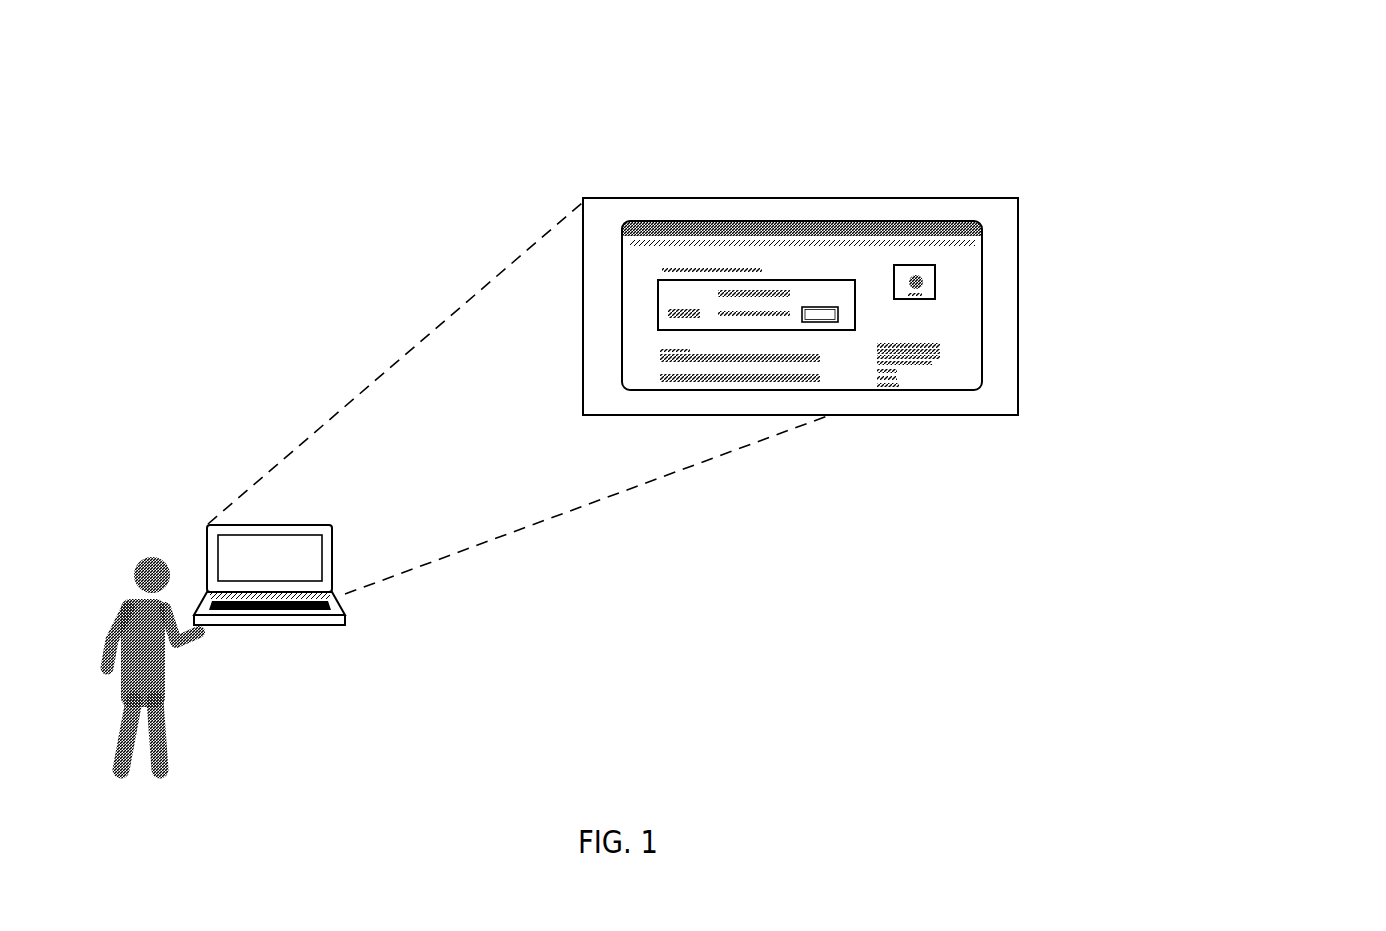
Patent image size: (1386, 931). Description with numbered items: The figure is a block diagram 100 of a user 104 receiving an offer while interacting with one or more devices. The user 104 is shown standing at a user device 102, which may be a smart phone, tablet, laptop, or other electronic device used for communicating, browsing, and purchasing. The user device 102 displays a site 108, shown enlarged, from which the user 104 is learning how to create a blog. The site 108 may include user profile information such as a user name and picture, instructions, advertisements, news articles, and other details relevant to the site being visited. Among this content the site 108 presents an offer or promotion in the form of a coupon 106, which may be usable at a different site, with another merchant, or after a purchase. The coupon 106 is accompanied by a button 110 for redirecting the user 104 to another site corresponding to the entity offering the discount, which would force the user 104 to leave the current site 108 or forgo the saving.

The block diagram 100 is at (1268, 86).
The user device 102 is at (333, 532).
The user 104 is at (164, 752).
The coupon 106 is at (658, 312).
The site 108 is at (1038, 231).
The button 110 is at (883, 316).